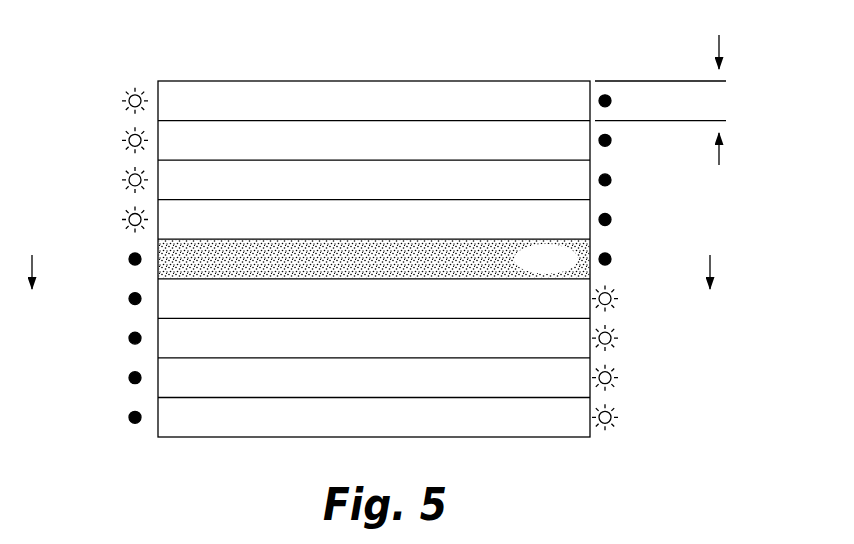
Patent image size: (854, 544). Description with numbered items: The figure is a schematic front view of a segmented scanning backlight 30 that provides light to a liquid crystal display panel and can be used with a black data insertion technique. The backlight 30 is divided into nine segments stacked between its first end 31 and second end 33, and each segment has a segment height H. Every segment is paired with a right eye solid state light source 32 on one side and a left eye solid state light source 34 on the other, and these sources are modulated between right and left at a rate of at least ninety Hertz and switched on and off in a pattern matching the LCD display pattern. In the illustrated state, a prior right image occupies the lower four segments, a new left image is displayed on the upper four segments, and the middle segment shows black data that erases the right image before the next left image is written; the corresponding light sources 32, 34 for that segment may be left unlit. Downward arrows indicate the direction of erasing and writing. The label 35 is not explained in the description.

The segmented scanning backlight 30 is at (556, 55).
The first end 31 is at (600, 446).
The right eye solid state light source 32 is at (638, 260).
The second end 33 is at (147, 443).
The left eye solid state light source 34 is at (101, 248).
The left image region 35 is at (265, 103).
The segment height H is at (718, 44).